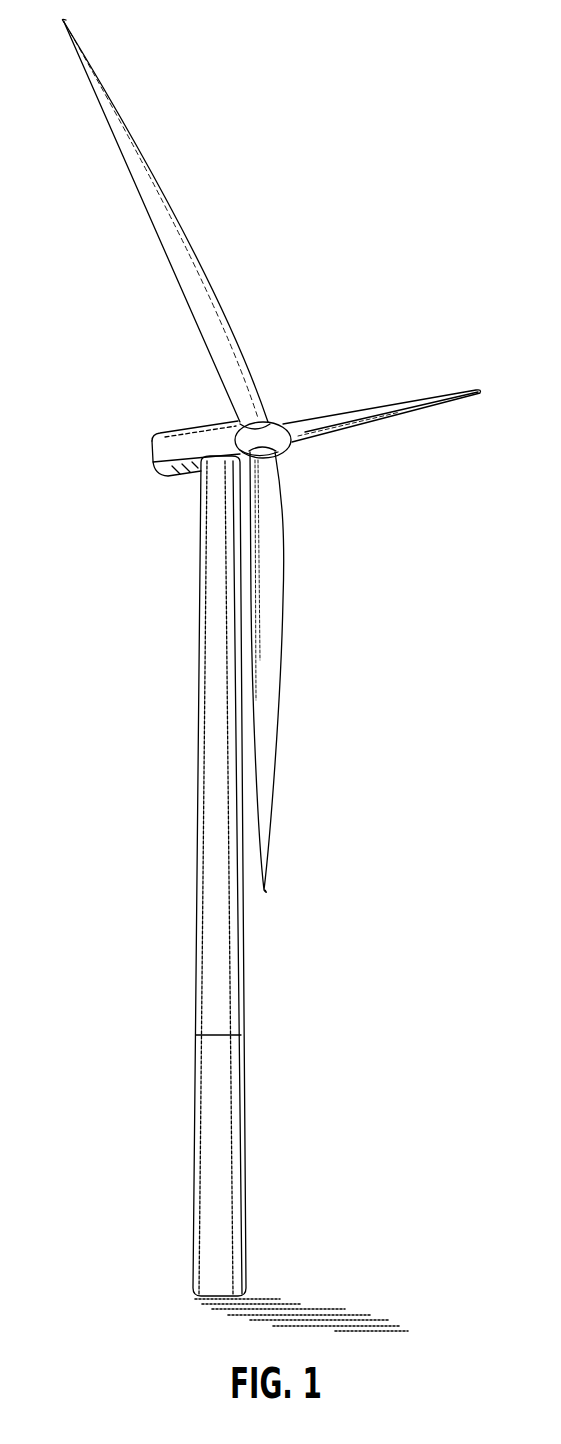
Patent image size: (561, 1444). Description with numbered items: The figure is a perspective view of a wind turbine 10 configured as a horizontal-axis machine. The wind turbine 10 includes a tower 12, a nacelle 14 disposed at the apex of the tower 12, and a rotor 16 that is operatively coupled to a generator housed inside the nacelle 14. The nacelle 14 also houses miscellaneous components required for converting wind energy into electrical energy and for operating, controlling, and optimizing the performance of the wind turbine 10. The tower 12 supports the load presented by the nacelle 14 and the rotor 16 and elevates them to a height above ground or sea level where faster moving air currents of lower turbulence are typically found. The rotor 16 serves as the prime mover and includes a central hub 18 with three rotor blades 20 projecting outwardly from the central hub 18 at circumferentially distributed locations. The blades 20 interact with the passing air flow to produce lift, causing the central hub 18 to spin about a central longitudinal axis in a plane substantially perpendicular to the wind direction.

The wind turbine 10 is at (373, 221).
The tower 12 is at (197, 800).
The nacelle 14 is at (157, 436).
The rotor 16 is at (283, 450).
The central hub 18 is at (273, 421).
The rotor blade 20 is at (201, 337).